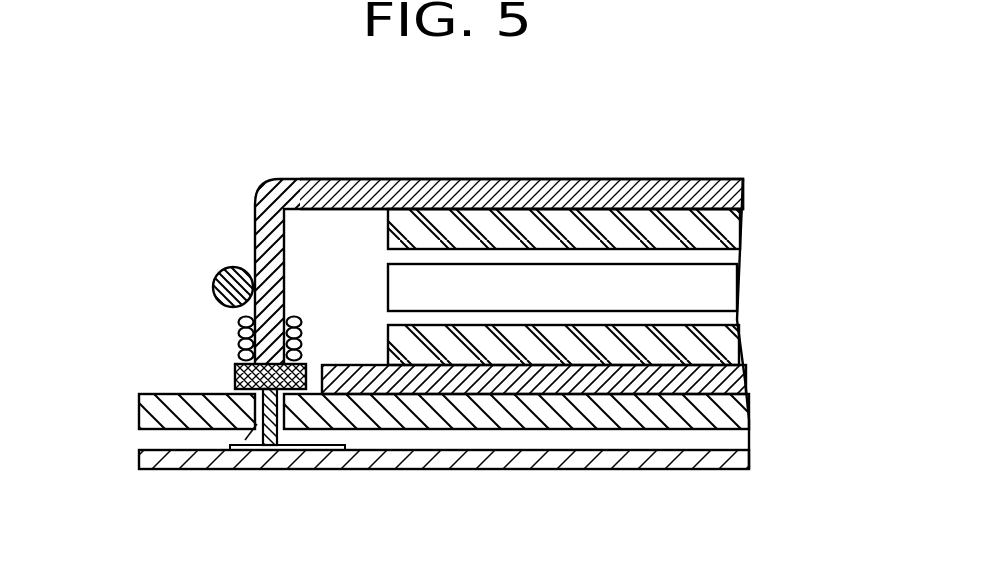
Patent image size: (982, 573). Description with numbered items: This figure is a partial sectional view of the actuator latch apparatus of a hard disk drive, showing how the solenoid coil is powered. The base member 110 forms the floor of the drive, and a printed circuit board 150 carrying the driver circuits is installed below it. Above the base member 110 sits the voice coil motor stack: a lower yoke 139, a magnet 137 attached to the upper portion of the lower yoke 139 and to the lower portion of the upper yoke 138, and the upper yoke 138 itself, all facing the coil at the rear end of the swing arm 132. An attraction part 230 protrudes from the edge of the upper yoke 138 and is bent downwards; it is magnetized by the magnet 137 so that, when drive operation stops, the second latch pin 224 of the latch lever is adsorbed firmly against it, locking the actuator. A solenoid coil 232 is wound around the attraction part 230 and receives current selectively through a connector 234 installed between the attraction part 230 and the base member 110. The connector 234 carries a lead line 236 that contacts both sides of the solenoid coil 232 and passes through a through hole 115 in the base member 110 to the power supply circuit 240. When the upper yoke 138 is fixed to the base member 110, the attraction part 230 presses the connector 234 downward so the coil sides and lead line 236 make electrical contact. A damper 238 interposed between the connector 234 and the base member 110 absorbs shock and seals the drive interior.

The base member 110 is at (743, 416).
The through hole 115 is at (245, 440).
The swing arm 132 is at (728, 288).
The magnet 137 is at (737, 228).
The upper yoke 138 is at (491, 179).
The lower yoke 139 is at (747, 378).
The printed circuit board 150 is at (607, 470).
The second latch pin 224 is at (220, 270).
The attraction part 230 is at (256, 222).
The solenoid coil 232 is at (240, 333).
The connector 234 is at (235, 374).
The lead line 236 is at (272, 448).
The damper 238 is at (233, 384).
The power supply circuit 240 is at (315, 451).